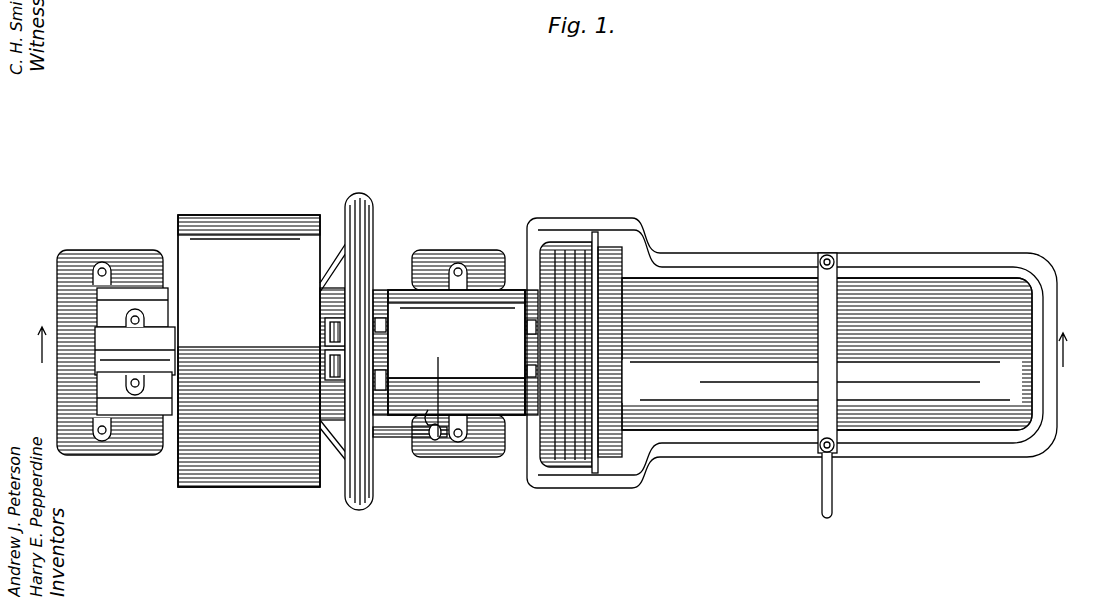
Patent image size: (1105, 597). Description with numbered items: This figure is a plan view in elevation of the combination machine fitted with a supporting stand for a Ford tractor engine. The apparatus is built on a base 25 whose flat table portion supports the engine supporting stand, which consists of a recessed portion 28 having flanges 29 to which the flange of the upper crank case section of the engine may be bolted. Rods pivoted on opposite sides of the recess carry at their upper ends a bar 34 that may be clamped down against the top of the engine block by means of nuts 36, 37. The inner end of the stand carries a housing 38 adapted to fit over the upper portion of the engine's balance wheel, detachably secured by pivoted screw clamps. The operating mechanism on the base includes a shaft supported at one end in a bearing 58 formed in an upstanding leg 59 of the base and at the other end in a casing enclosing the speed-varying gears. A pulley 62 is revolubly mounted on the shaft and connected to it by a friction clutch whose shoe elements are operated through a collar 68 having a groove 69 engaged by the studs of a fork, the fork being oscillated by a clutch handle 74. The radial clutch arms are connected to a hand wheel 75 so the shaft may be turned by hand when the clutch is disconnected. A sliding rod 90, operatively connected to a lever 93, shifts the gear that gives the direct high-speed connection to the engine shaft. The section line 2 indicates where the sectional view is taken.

The section line 2 is at (547, 347).
The base 25 is at (140, 442).
The recessed portion 28 is at (1030, 320).
The flanges 29 is at (972, 263).
The bar 34 is at (833, 390).
The nut 36 is at (830, 257).
The nut 37 is at (822, 497).
The housing 38 is at (562, 247).
The bearing 58 is at (177, 350).
The upstanding leg 59 is at (97, 390).
The pulley 62 is at (258, 485).
The collar 68 is at (322, 342).
The groove 69 is at (324, 328).
The clutch handle 74 is at (405, 440).
The hand wheel 75 is at (360, 195).
The sliding rod 90 is at (437, 378).
The lever 93 is at (436, 442).